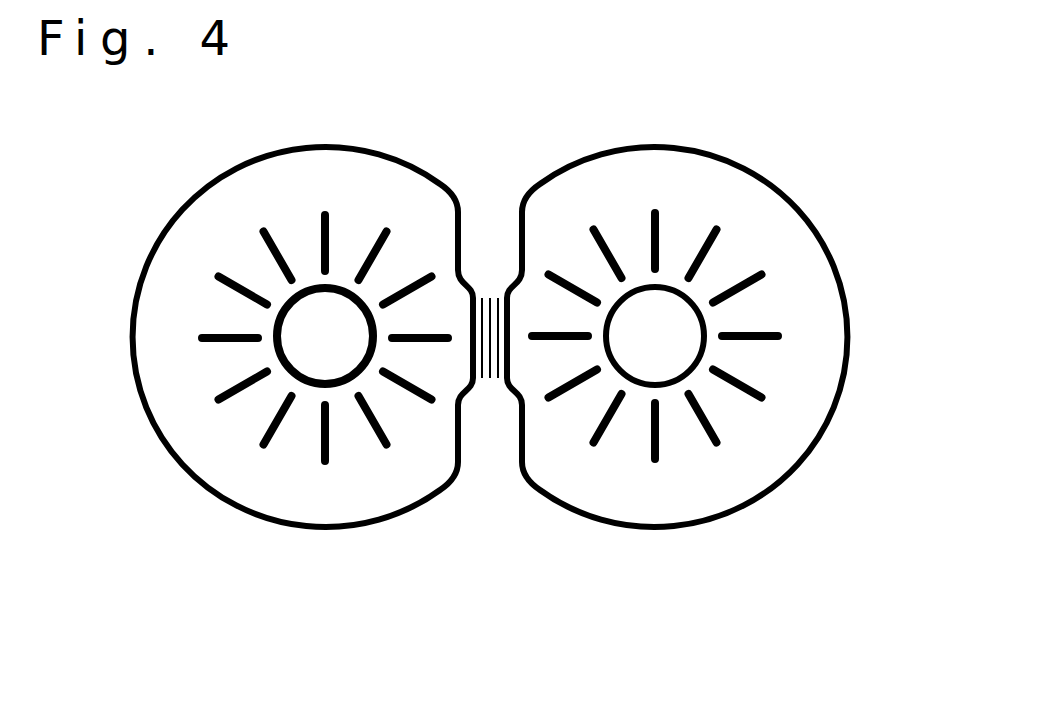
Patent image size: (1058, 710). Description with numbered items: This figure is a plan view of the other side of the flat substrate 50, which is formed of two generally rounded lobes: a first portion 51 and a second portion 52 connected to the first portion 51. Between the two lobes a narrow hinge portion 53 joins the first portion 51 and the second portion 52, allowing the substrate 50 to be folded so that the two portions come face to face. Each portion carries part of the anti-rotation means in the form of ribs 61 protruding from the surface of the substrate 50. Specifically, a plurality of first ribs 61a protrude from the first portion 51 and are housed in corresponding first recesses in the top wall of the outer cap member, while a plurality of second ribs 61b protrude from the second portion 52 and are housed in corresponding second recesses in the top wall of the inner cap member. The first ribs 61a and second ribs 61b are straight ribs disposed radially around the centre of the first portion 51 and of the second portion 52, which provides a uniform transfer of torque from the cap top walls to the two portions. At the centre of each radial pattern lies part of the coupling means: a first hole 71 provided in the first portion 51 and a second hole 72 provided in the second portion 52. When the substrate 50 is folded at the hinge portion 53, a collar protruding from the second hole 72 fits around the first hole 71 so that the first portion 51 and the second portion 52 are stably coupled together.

The substrate 50 is at (487, 329).
The first portion 51 is at (785, 467).
The second portion 52 is at (212, 485).
The hinge portion 53 is at (487, 373).
The ribs 61 is at (208, 328).
The first ribs 61a is at (742, 392).
The second ribs 61b is at (252, 385).
The first hole 71 is at (605, 340).
The second hole 72 is at (283, 336).